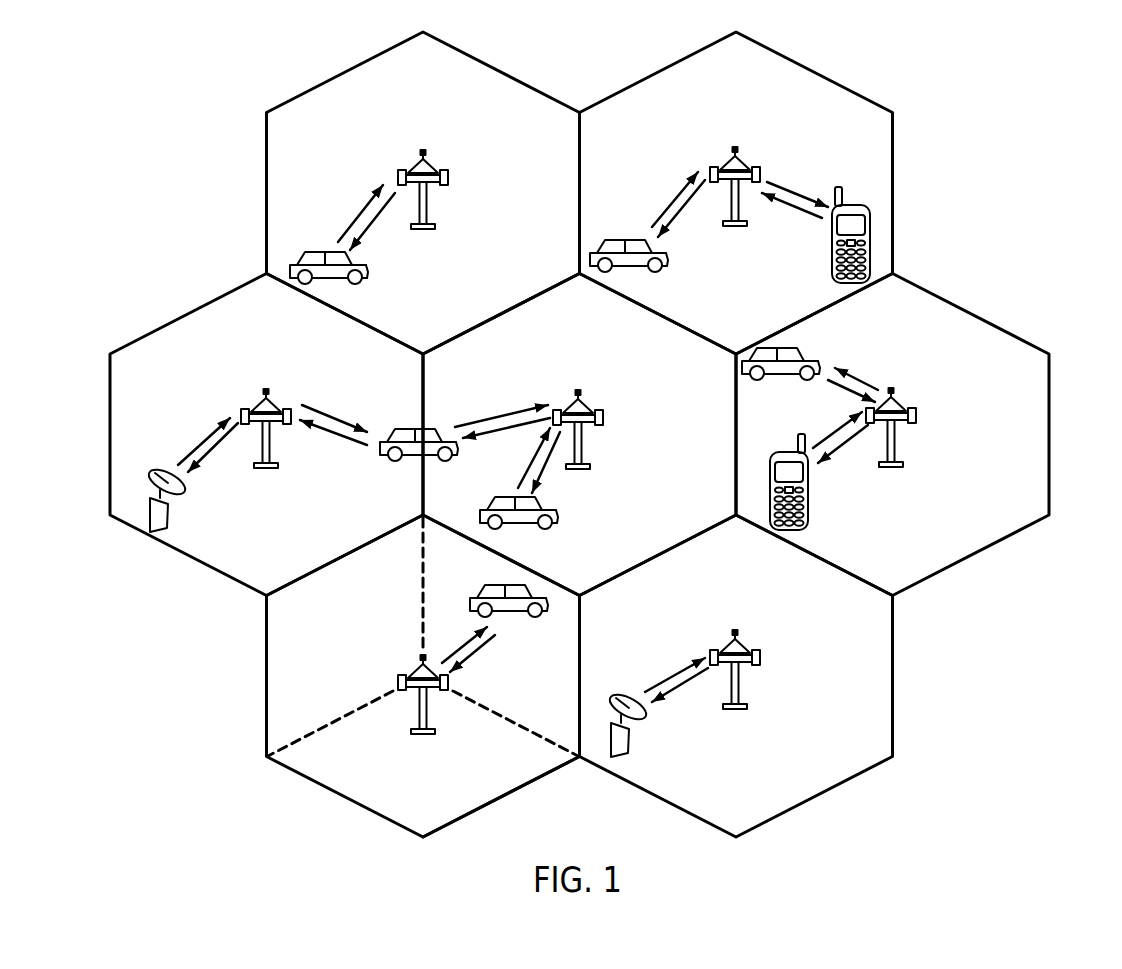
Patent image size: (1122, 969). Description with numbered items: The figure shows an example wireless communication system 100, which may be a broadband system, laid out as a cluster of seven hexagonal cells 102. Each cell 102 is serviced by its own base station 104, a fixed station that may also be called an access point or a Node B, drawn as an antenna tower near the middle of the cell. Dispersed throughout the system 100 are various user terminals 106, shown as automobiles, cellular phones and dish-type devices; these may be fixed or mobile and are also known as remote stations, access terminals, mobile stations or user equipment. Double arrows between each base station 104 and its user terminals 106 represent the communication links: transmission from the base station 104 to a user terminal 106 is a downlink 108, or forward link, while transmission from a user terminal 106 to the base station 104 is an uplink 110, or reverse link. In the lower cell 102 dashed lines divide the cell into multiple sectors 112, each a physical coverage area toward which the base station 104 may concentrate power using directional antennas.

The wireless communication system 100 is at (1033, 111).
The cell 102 is at (356, 65).
The base station 104 is at (423, 150).
The user terminal 106 is at (368, 278).
The downlink 108 is at (366, 234).
The uplink 110 is at (362, 213).
The sector 112 is at (477, 793).